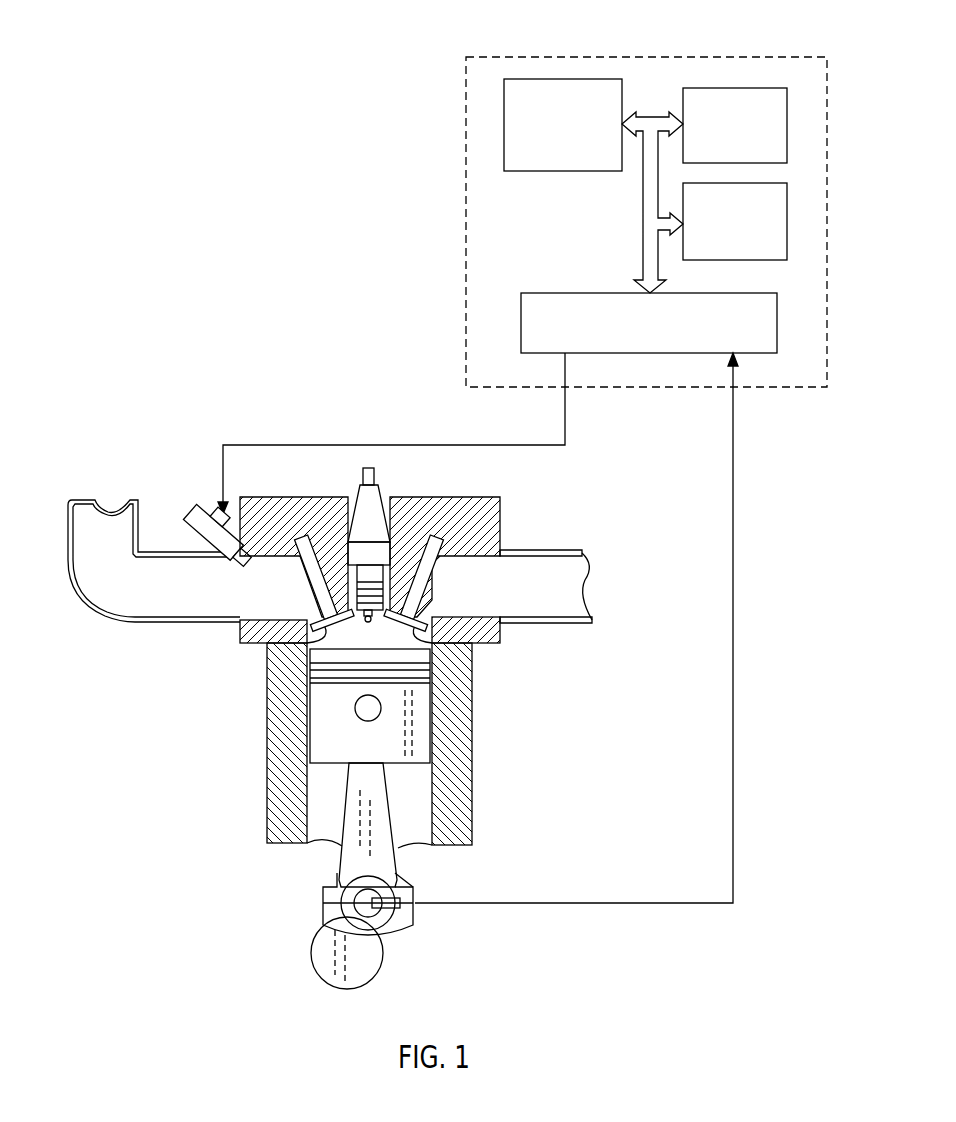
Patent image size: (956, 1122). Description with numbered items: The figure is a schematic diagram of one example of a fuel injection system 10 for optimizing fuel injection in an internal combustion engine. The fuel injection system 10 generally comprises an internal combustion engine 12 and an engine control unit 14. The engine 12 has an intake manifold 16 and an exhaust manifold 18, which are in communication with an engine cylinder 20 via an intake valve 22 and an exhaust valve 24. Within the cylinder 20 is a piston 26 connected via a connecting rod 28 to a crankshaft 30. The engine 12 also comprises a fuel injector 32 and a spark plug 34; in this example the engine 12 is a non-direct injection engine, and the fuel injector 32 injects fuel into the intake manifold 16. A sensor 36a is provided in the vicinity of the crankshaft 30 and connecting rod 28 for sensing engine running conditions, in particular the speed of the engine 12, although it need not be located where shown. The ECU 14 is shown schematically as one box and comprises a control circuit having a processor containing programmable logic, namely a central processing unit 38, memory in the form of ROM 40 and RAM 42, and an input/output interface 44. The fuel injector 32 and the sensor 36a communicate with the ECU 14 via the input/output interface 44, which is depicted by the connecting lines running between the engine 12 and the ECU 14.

The fuel injection system 10 is at (282, 198).
The internal combustion engine 12 is at (328, 715).
The engine control unit 14 is at (641, 196).
The intake manifold 16 is at (103, 612).
The exhaust manifold 18 is at (548, 552).
The engine cylinder 20 is at (417, 787).
The intake valve 22 is at (330, 652).
The exhaust valve 24 is at (420, 613).
The piston 26 is at (332, 770).
The connecting rod 28 is at (400, 853).
The crankshaft 30 is at (320, 935).
The fuel injector 32 is at (192, 512).
The spark plug 34 is at (383, 492).
The sensor 36a is at (388, 915).
The central processing unit 38 is at (504, 107).
The ROM 40 is at (726, 88).
The RAM 42 is at (787, 221).
The input/output interface 44 is at (777, 313).